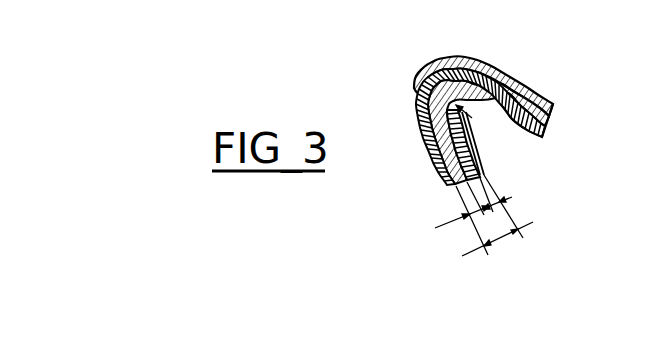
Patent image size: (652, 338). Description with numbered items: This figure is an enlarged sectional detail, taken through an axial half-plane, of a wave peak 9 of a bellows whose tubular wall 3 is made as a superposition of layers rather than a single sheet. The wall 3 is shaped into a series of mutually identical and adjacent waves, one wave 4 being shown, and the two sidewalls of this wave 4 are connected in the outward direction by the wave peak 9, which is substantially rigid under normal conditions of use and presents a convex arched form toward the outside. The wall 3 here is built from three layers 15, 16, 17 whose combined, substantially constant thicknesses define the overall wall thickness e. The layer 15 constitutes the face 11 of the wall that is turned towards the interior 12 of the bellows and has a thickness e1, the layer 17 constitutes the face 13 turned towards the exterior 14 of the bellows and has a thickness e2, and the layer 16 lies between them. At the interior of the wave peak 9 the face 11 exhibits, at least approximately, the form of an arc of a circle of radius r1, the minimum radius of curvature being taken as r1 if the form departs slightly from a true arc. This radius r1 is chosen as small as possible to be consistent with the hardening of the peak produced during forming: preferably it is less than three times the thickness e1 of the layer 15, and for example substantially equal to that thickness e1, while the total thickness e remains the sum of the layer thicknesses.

The exterior of the bellows 14 is at (459, 48).
The tubular wall 3 is at (488, 65).
The face turned towards the exterior 13 is at (525, 86).
The layer 17 is at (552, 108).
The layer 16 is at (549, 118).
The layer 15 is at (545, 128).
The face turned towards the interior 11 is at (540, 139).
The interior of the bellows 12 is at (521, 162).
The wave 4 is at (441, 178).
The wave peak 9 is at (415, 89).
The radius r1 is at (477, 122).
The thickness of the wall e is at (504, 223).
The thickness of the layer 15 e1 is at (510, 201).
The thickness of the layer 17 e2 is at (468, 216).